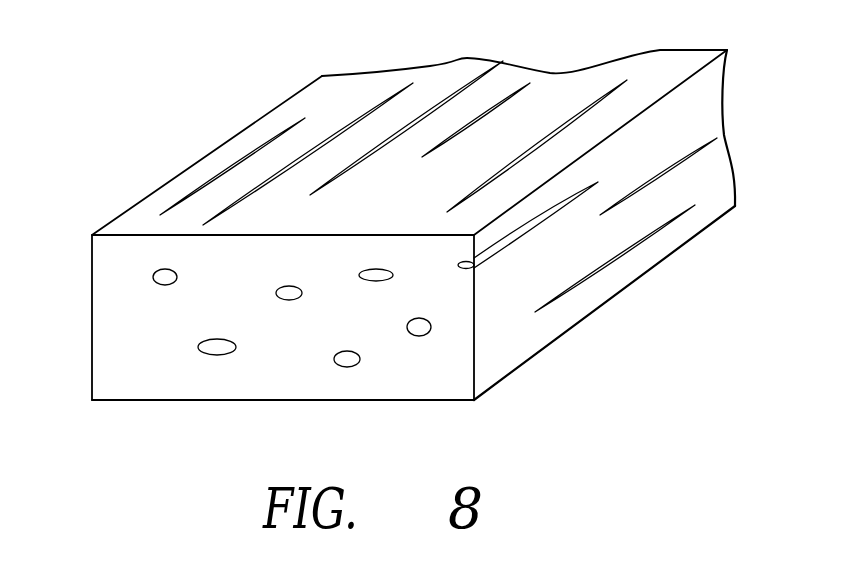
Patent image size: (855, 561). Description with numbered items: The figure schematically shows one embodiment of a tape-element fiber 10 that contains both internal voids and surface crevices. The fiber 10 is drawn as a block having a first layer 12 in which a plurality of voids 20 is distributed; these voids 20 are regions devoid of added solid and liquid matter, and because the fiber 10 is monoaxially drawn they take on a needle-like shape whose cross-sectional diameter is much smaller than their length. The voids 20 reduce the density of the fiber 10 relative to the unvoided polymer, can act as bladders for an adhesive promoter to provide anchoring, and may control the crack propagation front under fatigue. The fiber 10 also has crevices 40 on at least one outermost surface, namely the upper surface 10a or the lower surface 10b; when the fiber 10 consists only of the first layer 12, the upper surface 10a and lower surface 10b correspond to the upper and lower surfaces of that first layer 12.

The fiber 10 is at (386, 238).
The upper surface 10a is at (92, 234).
The lower surface 10b is at (92, 400).
The first layer 12 is at (108, 308).
The voids 20 is at (613, 258).
The crevices 40 is at (452, 98).